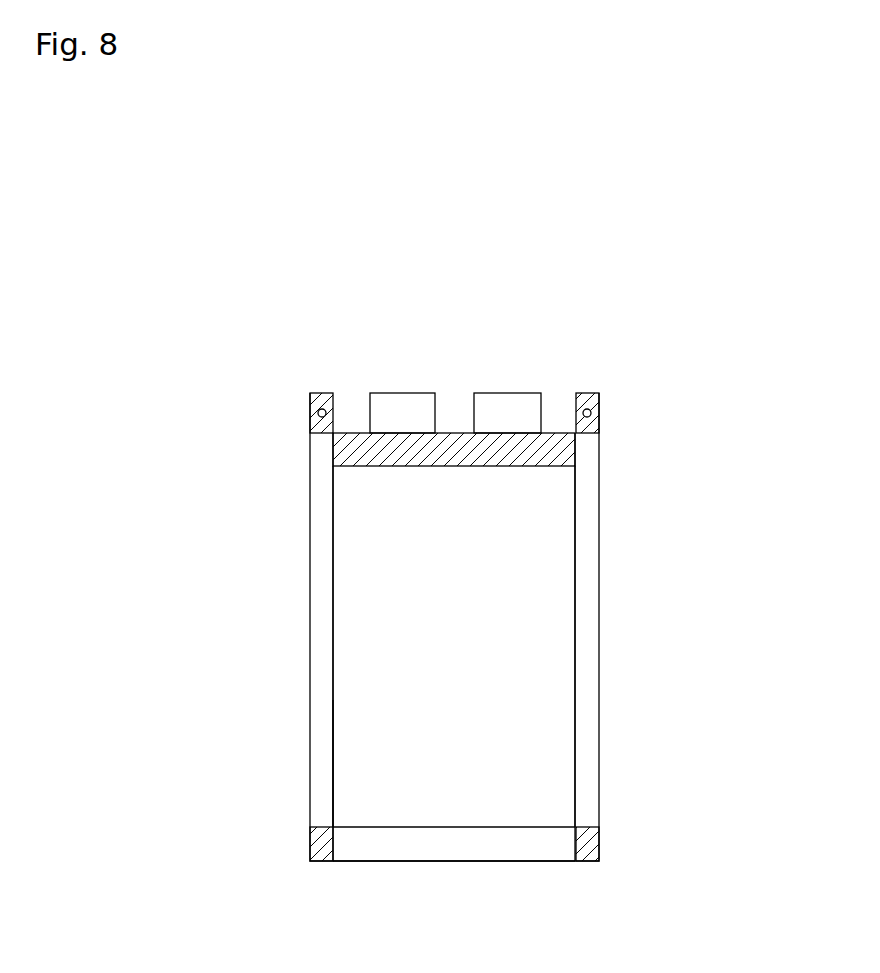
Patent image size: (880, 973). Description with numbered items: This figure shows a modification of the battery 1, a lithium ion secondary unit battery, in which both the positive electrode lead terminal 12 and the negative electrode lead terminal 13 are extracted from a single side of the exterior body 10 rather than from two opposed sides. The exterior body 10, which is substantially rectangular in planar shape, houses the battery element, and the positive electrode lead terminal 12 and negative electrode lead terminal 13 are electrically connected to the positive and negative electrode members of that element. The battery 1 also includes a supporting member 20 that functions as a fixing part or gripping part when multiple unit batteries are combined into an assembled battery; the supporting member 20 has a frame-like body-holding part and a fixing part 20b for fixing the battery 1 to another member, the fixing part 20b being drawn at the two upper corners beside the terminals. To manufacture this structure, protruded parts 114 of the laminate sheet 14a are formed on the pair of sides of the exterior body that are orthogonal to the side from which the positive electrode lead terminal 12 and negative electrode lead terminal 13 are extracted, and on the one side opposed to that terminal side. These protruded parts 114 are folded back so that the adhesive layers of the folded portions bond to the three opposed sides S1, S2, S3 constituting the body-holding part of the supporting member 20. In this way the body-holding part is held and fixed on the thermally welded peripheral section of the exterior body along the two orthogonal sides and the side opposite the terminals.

The battery 1 is at (567, 277).
The exterior body 10 is at (601, 552).
The protruded parts 114 is at (588, 662).
The laminate sheet 14a is at (320, 588).
The side S1 is at (588, 766).
The side S2 is at (322, 794).
The side S3 is at (373, 846).
The supporting member 20 is at (459, 430).
The fixing part 20b is at (318, 391).
The negative electrode lead terminal 13 is at (405, 391).
The positive electrode lead terminal 12 is at (510, 391).